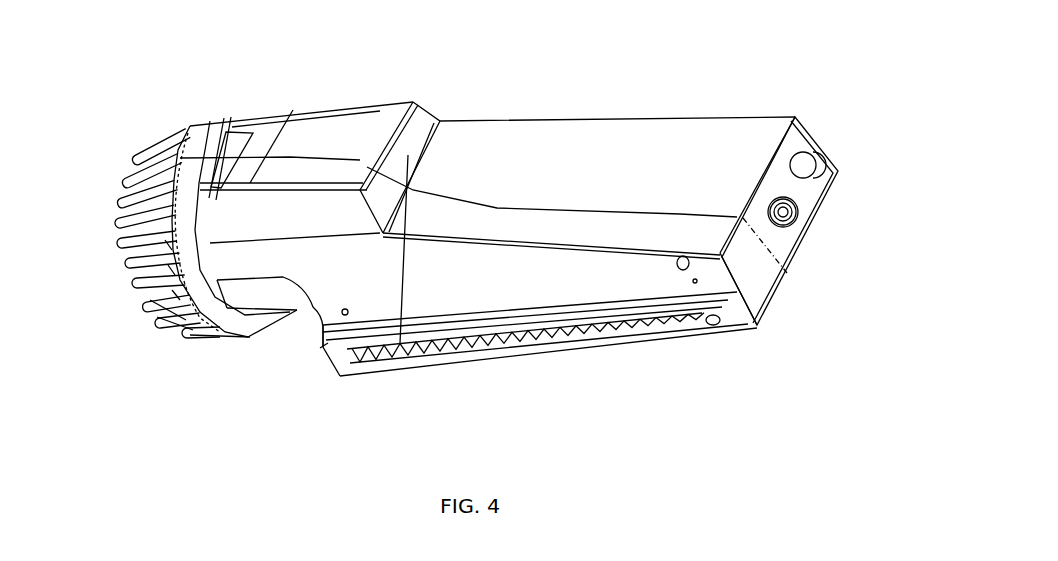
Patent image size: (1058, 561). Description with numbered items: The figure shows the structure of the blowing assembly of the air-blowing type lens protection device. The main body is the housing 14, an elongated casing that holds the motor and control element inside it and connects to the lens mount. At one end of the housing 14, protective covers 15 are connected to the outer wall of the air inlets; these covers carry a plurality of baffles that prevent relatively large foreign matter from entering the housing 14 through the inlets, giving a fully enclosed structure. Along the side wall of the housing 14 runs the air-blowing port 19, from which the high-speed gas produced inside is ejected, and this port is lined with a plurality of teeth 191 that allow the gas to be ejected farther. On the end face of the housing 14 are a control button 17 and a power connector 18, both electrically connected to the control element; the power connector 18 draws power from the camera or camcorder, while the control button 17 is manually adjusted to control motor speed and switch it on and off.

The housing 14 is at (507, 185).
The protective covers 15 is at (132, 261).
The control button 17 is at (813, 163).
The power connector 18 is at (790, 211).
The air-blowing port 19 is at (379, 350).
The teeth 191 is at (483, 334).